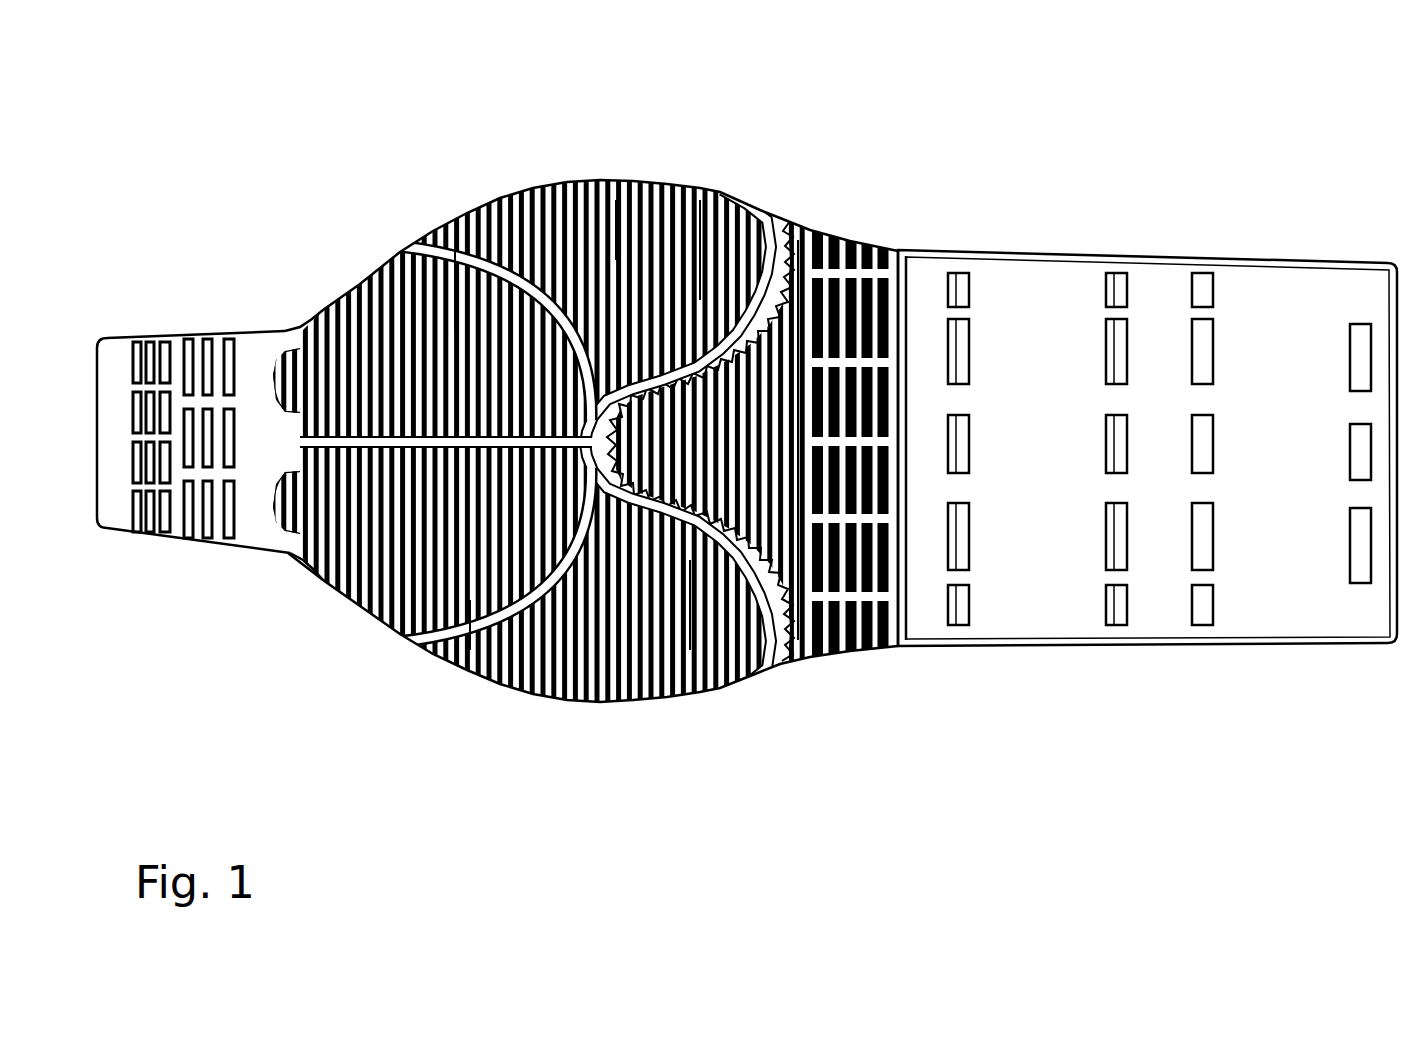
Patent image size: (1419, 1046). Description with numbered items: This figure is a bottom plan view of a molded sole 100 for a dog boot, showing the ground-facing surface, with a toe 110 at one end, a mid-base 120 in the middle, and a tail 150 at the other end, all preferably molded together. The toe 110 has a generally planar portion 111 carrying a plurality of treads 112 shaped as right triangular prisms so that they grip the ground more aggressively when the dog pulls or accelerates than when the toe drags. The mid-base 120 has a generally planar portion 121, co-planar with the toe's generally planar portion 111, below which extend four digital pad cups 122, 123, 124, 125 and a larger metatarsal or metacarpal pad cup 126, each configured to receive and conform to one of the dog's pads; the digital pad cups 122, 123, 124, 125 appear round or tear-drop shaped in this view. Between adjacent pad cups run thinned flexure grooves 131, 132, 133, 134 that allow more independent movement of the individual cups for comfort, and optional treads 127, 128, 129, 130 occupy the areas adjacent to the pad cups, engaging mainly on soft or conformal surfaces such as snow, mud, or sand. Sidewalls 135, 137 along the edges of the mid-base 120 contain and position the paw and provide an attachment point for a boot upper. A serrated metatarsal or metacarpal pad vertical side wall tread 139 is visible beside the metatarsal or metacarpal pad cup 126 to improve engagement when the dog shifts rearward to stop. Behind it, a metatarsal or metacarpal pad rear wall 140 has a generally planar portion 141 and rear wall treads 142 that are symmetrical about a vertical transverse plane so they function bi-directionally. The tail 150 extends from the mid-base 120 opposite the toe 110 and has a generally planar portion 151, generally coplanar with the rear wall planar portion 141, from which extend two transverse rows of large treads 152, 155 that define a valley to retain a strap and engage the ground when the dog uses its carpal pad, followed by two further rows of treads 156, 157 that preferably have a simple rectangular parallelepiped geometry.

The molded sole 100 is at (1172, 87).
The toe 110 is at (175, 288).
The generally planar portion 111 is at (110, 513).
The treads 112 is at (201, 527).
The mid-base 120 is at (572, 174).
The generally planar portion 121 is at (797, 237).
The digital pad cup 122 is at (712, 222).
The digital pad cup 123 is at (455, 330).
The digital pad cup 124 is at (323, 512).
The digital pad cup 125 is at (690, 655).
The metatarsal or metacarpal pad cup 126 is at (800, 658).
The tread 127 is at (618, 200).
The tread 128 is at (375, 290).
The tread 129 is at (295, 549).
The tread 130 is at (553, 690).
The flexure groove 131 is at (783, 220).
The flexure groove 132 is at (400, 235).
The flexure groove 133 is at (275, 438).
The flexure groove 134 is at (406, 637).
The sidewall 135 is at (602, 180).
The sidewall 137 is at (456, 648).
The metatarsal or metacarpal pad vertical side wall tread 139 is at (786, 662).
The metatarsal or metacarpal pad rear wall 140 is at (879, 240).
The metatarsal or metacarpal pad rear wall generally planar portion 141 is at (903, 277).
The metatarsal or metacarpal pad rear wall treads 142 is at (867, 647).
The tail 150 is at (1329, 260).
The generally planar portion 151 is at (1163, 628).
The treads 152 is at (972, 338).
The treads 155 is at (1126, 340).
The treads 156 is at (1208, 345).
The treads 157 is at (1338, 515).